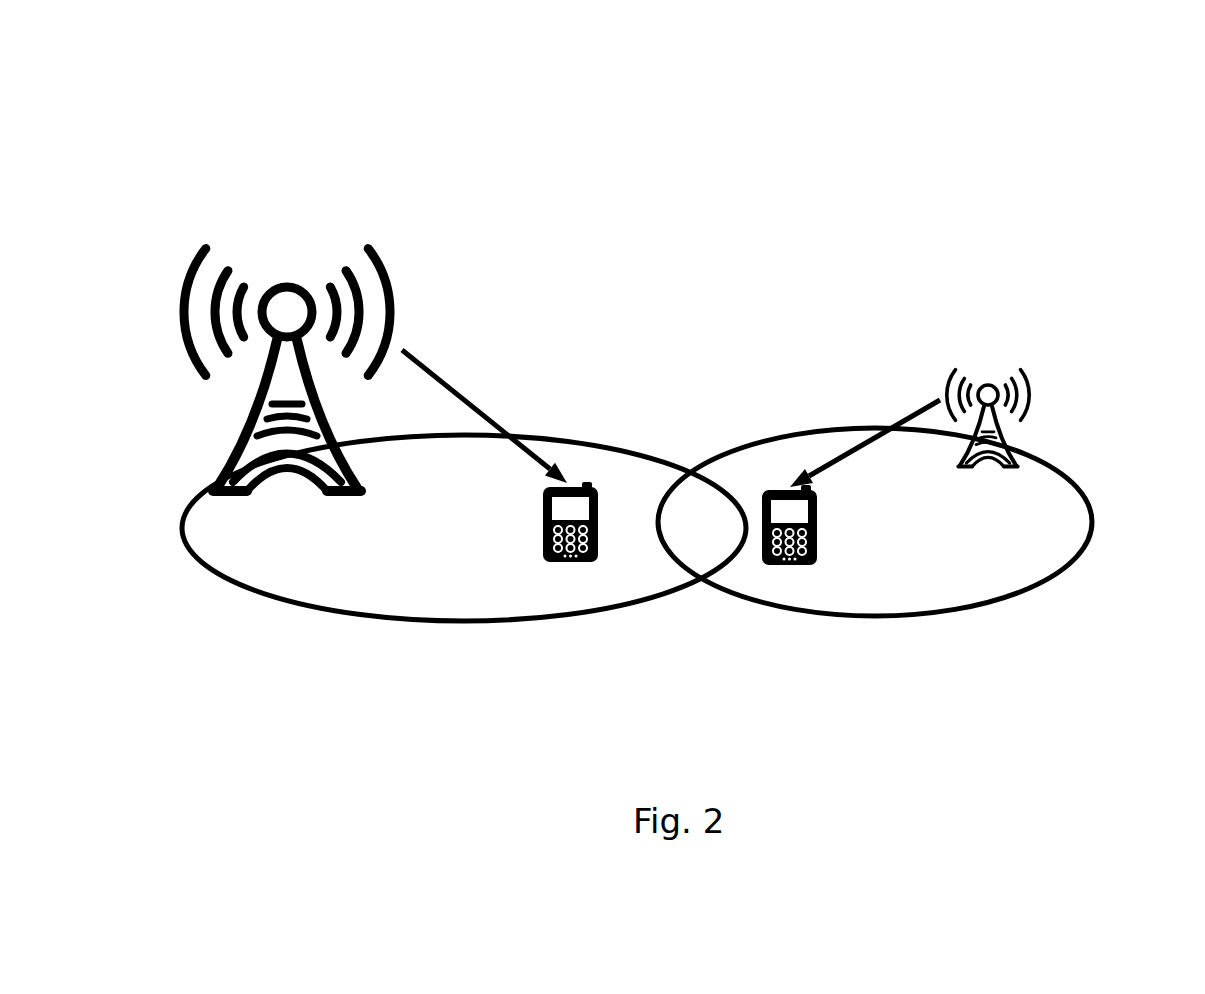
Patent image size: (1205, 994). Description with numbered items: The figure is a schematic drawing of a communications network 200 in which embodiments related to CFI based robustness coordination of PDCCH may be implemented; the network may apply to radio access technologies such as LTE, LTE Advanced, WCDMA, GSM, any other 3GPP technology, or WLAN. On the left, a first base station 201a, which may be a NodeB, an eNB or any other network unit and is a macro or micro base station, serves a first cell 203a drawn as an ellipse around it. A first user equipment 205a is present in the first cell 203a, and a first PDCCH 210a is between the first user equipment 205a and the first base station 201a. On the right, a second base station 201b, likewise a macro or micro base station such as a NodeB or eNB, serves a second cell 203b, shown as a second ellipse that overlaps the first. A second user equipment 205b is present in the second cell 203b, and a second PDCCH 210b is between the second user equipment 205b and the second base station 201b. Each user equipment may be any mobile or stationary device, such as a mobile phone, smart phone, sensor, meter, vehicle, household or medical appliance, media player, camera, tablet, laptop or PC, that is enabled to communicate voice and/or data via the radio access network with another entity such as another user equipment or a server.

The communications network 200 is at (430, 133).
The first base station 201a is at (262, 401).
The second base station 201b is at (1010, 447).
The first cell 203a is at (283, 603).
The second cell 203b is at (1072, 568).
The first user equipment 205a is at (595, 532).
The second user equipment 205b is at (805, 563).
The first PDCCH 210a is at (498, 368).
The second PDCCH 210b is at (868, 398).